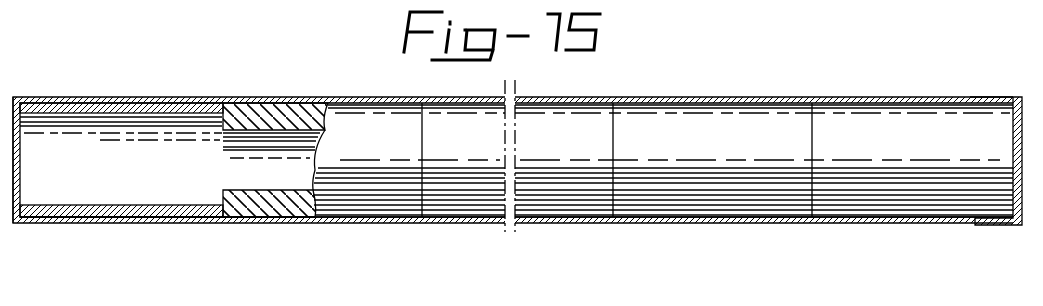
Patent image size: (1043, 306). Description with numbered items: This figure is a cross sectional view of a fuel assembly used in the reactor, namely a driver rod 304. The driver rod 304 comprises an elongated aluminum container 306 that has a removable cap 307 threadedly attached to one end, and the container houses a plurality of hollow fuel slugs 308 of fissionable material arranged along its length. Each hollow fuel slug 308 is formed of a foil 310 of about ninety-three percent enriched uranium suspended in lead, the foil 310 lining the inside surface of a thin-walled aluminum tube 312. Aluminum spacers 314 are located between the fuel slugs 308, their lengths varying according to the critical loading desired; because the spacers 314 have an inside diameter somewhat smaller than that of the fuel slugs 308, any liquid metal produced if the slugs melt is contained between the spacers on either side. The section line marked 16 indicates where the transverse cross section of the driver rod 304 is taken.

The driver rod 304 is at (786, 66).
The aluminum container 306 is at (126, 218).
The removable cap 307 is at (993, 226).
The hollow fuel slug 308 is at (167, 144).
The foil 310 is at (140, 90).
The aluminum tube 312 is at (84, 86).
The aluminum spacer 314 is at (357, 128).
The section line for FIG. 16 is at (297, 63).